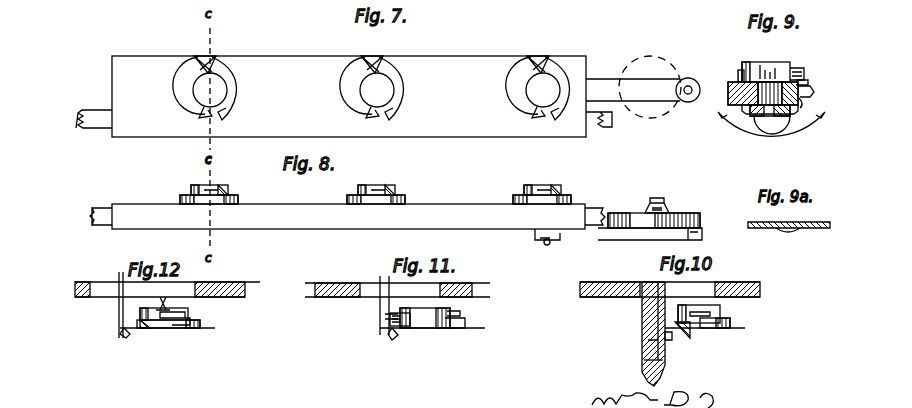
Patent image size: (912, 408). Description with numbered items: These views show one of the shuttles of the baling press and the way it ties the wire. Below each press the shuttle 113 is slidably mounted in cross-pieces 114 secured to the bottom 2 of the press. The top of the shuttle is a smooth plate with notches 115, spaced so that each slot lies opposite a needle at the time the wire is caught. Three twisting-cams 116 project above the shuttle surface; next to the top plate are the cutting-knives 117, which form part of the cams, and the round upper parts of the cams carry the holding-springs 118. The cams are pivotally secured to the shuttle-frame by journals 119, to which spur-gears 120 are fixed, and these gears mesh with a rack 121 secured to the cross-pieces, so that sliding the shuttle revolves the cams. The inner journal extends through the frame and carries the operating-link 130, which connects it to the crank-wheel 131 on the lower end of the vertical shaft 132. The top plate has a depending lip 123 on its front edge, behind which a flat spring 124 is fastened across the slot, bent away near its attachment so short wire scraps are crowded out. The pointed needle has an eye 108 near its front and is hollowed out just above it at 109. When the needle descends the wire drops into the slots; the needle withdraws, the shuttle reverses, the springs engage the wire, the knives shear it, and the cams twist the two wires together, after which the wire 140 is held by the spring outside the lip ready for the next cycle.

In FIG. 12, the bottom 2 is at (233, 297).
In FIG. 11, the bottom 2 is at (340, 297).
In FIG. 10, the bottom 2 is at (592, 297).
In FIG. 10, the eye 108 is at (644, 362).
In FIG. 10, the hollowed-out portion 109 is at (642, 330).
In FIG. 7, the shuttle 113 is at (349, 96).
In FIG. 8, the shuttle 113 is at (348, 216).
In FIG. 12, the shuttle 113 is at (120, 334).
In FIG. 11, the shuttle 113 is at (382, 338).
In FIG. 9, the cross-pieces 114 is at (785, 130).
In FIG. 7, the notches 115 is at (203, 32).
In FIG. 7, the twisting-cams 116 is at (222, 92).
In FIG. 8, the twisting-cams 116 is at (212, 183).
In FIG. 9, the twisting-cams 116 is at (775, 66).
In FIG. 12, the twisting-cams 116 is at (152, 330).
In FIG. 11, the twisting-cams 116 is at (437, 330).
In FIG. 7, the cutting-knives 117 is at (232, 112).
In FIG. 9, the cutting-knives 117 is at (808, 80).
In FIG. 11, the cutting-knives 117 is at (402, 330).
In FIG. 7, the holding-springs 118 is at (200, 124).
In FIG. 9, the holding-springs 118 is at (741, 70).
In FIG. 12, the holding-springs 118 is at (168, 328).
In FIG. 11, the holding-springs 118 is at (462, 313).
In FIG. 9, the journals 119 is at (765, 112).
In FIG. 9, the spur-gears 120 is at (800, 107).
In FIG. 7, the rack 121 is at (92, 128).
In FIG. 8, the rack 121 is at (96, 228).
In FIG. 9, the rack 121 is at (722, 118).
In FIG. 9, the lip 123 is at (814, 90).
In FIG. 9A, the lip 123 is at (800, 222).
In FIG. 9, the flat spring 124 is at (814, 97).
In FIG. 9A, the flat spring 124 is at (786, 232).
In FIG. 12, the flat spring 124 is at (127, 338).
In FIG. 11, the flat spring 124 is at (392, 340).
In FIG. 10, the flat spring 124 is at (680, 340).
In FIG. 7, the operating-link 130 is at (612, 84).
In FIG. 8, the operating-link 130 is at (585, 232).
In FIG. 8, the crank-wheel 131 is at (626, 212).
In FIG. 8, the vertical shaft 132 is at (664, 200).
In FIG. 12, the wire 140 is at (118, 304).
In FIG. 10, the wire 140 is at (710, 297).